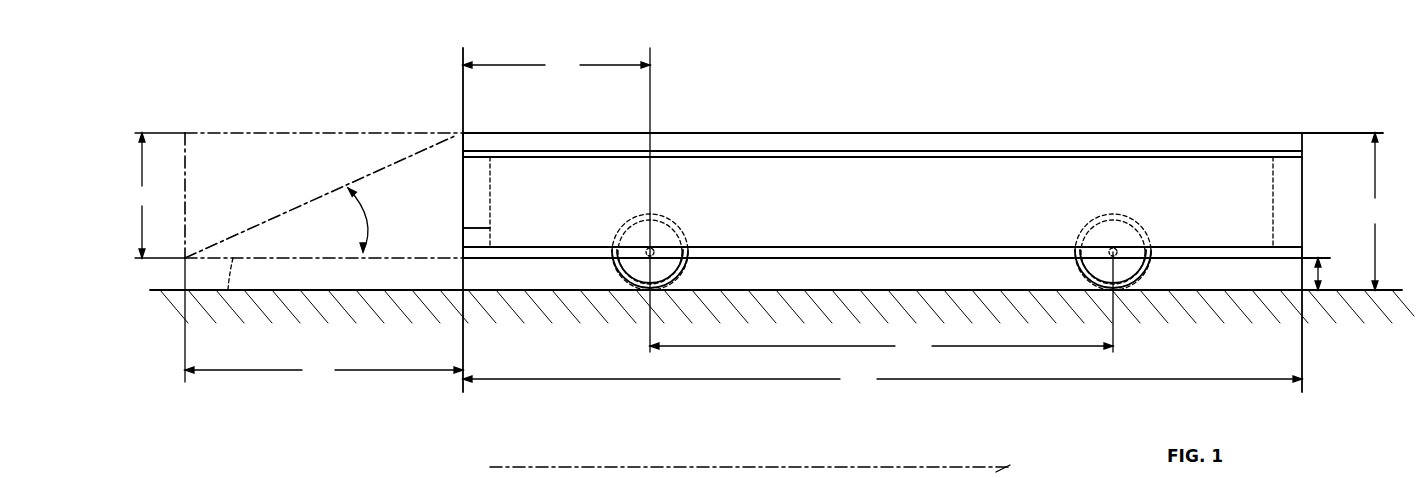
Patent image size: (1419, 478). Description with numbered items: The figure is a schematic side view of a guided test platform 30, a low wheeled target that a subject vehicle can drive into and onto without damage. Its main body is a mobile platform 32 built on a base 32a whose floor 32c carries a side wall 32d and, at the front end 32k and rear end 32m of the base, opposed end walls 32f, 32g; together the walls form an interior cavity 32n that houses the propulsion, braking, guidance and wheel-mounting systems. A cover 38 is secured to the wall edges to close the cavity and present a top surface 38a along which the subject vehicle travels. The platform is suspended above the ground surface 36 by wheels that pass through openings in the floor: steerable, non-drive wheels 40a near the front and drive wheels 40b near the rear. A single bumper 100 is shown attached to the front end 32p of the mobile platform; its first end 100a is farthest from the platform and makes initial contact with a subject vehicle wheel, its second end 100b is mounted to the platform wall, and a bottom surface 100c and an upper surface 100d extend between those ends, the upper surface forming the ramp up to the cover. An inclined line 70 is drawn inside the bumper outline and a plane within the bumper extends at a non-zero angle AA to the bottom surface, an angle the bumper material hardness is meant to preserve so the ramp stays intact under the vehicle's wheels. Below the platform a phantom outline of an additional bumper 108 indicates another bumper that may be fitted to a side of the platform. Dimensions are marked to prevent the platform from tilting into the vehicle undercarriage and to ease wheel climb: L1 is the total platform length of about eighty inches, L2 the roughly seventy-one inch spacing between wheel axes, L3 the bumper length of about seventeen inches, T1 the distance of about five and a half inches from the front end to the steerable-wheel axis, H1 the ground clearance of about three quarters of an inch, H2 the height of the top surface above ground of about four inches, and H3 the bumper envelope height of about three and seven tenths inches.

The guided test platform 30 is at (200, 117).
The mobile platform 32 is at (947, 212).
The base 32a is at (479, 260).
The floor 32c is at (568, 250).
The side wall 32d is at (910, 212).
The end wall 32f is at (493, 210).
The end wall 32g is at (1270, 200).
The front end of base 32k is at (460, 253).
The rear end of base 32m is at (1292, 251).
The interior cavity 32n is at (985, 190).
The front end of mobile platform 32p is at (461, 196).
The ground or road surface 36 is at (272, 291).
The cover 38 is at (788, 142).
The top surface of cover 38a is at (727, 133).
The steerable wheels 40a is at (690, 278).
The drive wheels 40b is at (1150, 278).
The diagonal ramp line 70 is at (292, 209).
The bumper 100 is at (210, 160).
The first end of bumper 100a is at (185, 235).
The second end of bumper 100b is at (463, 230).
The bottom surface of bumper 100c is at (187, 300).
The upper surface of bumper 100d is at (238, 133).
The bumper 108 is at (655, 475).
The first non-zero angle AA is at (372, 212).
The distance from front end to steerable wheel axis T1 is at (556, 65).
The ground clearance H1 is at (1323, 274).
The top surface height H2 is at (1373, 211).
The bumper envelope height H3 is at (157, 195).
The total length of mobile platform L1 is at (882, 379).
The wheel axis distance L2 is at (881, 346).
The bumper length L3 is at (324, 320).